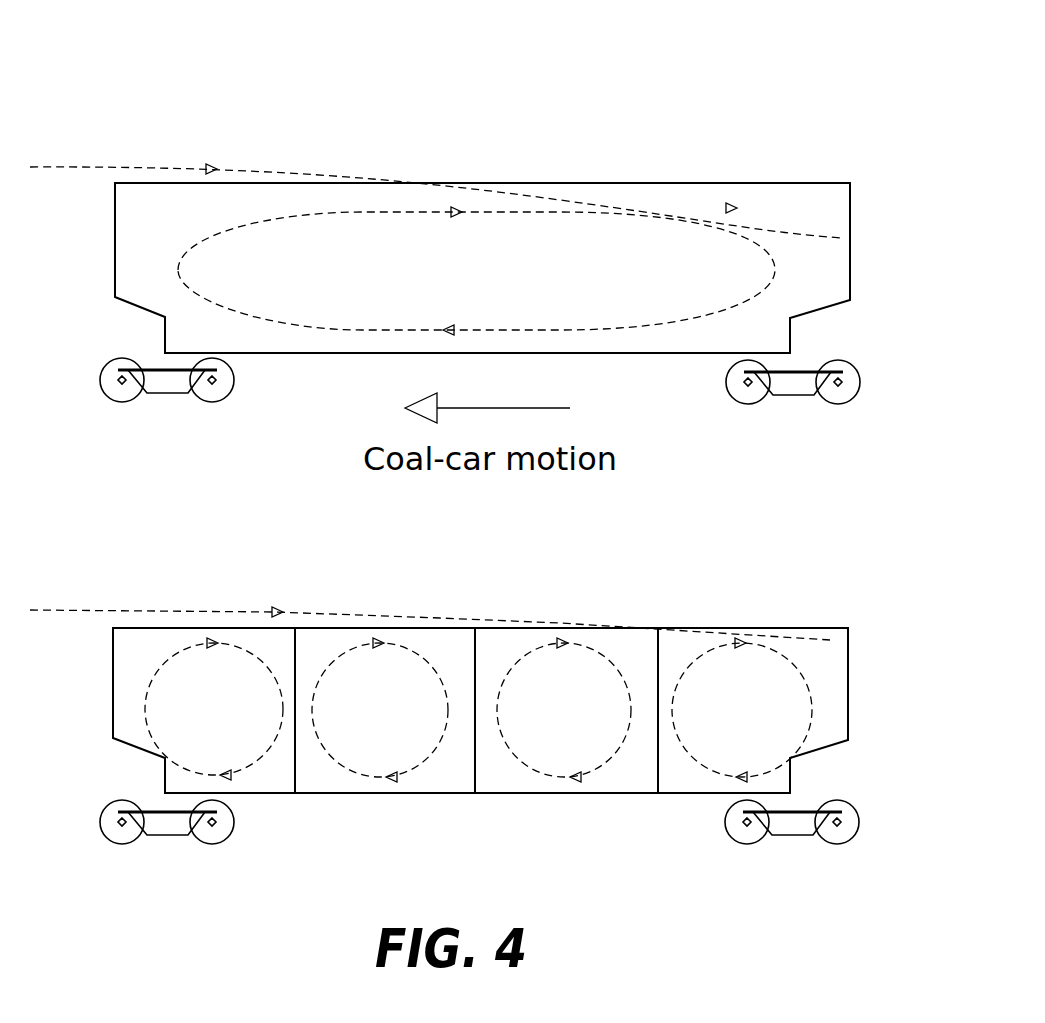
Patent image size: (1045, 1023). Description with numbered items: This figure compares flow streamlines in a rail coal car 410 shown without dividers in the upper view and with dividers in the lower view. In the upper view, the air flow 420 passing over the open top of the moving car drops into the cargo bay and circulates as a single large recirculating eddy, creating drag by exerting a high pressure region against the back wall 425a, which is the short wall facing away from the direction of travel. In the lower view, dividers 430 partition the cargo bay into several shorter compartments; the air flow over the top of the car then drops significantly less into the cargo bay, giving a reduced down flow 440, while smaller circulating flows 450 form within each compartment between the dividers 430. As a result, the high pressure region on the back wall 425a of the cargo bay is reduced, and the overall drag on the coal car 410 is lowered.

The coal car 410 is at (803, 472).
The air flow 420 is at (283, 170).
The back wall 425a is at (852, 208).
The dividers 430 is at (300, 773).
The reduced down flow 440 is at (843, 642).
The circulating air flow 450 is at (177, 645).